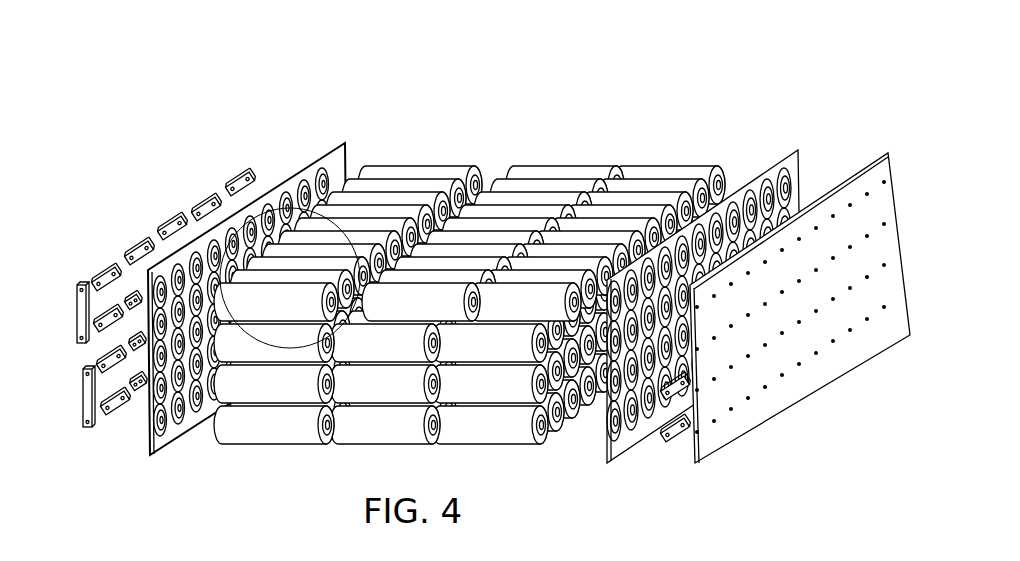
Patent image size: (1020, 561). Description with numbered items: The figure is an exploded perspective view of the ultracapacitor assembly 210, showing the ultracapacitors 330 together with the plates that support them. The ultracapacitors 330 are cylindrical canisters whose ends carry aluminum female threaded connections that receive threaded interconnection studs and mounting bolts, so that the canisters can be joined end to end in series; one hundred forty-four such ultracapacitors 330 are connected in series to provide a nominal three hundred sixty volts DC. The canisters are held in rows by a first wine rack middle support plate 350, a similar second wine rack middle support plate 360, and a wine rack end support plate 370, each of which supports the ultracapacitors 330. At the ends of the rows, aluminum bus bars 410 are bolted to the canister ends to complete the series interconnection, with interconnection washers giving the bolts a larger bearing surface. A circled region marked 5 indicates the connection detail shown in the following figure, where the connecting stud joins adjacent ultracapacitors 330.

The detail region of FIG. 5 is at (234, 197).
The ultracapacitor assembly 210 is at (690, 158).
The ultracapacitor 330 is at (499, 270).
The first wine rack middle support plate 350 is at (605, 465).
The second wine rack middle support plate 360 is at (341, 143).
The wine rack end support plate 370 is at (696, 460).
The aluminum bus bar 410 is at (78, 323).